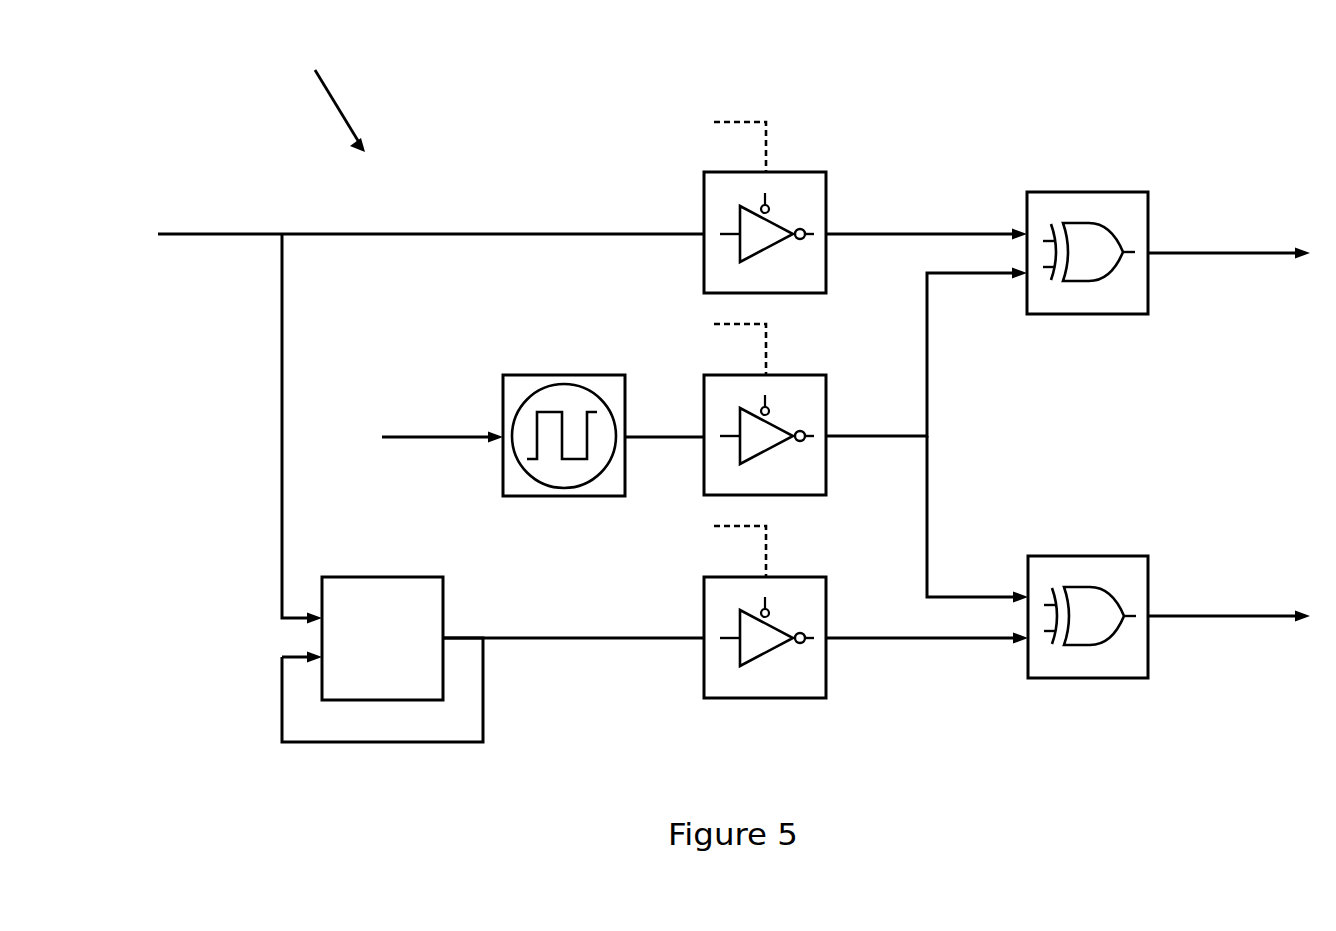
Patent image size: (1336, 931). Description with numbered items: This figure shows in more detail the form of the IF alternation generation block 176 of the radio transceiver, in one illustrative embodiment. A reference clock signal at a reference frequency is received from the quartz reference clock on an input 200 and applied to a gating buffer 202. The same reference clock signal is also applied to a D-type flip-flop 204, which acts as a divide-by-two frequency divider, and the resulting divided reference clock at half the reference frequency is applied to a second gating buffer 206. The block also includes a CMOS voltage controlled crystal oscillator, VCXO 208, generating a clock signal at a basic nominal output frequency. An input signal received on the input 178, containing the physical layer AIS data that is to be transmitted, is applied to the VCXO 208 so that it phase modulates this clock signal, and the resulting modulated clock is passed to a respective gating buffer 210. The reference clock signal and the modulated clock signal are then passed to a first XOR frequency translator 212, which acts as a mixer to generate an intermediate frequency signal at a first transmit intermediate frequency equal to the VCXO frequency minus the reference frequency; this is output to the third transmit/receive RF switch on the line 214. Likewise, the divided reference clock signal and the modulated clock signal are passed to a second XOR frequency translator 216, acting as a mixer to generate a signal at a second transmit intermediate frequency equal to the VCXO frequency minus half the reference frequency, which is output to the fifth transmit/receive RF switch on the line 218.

The IF alternation generation block 176 is at (326, 95).
The input 178 is at (415, 435).
The input 200 is at (197, 232).
The gating buffer 202 is at (799, 171).
The D-type flip-flop 204 is at (385, 576).
The second gating buffer 206 is at (790, 700).
The CMOS voltage controlled crystal oscillator (VCXO) 208 is at (566, 374).
The gating buffer 210 is at (793, 374).
The first XOR frequency translator 212 is at (1100, 191).
The line 214 is at (1247, 251).
The second XOR frequency translator 216 is at (1088, 555).
The line 218 is at (1247, 614).